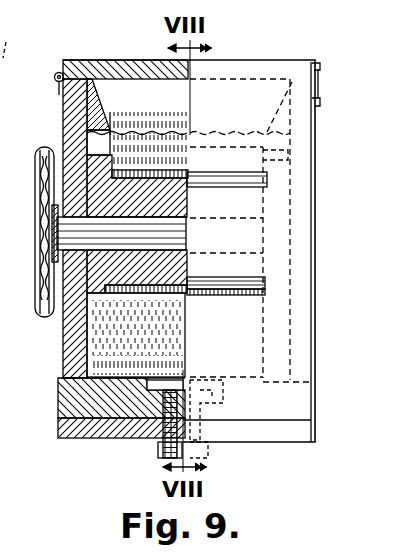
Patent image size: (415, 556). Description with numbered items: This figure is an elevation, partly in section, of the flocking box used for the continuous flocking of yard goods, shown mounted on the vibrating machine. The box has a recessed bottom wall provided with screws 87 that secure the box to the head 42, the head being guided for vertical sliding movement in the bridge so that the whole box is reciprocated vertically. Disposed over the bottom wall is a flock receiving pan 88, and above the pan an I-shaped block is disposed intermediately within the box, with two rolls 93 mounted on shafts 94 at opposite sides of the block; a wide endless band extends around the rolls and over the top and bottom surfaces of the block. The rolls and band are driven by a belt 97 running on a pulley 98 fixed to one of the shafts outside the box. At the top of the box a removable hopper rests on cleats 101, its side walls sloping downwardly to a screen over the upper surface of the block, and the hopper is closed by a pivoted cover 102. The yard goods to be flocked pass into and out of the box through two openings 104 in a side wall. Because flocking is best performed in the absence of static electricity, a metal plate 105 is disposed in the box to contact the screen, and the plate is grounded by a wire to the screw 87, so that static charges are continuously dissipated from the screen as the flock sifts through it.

The head 42 is at (207, 450).
The screws 87 is at (160, 410).
The flock receiving pan 88 is at (67, 380).
The rolls 93 is at (63, 150).
The shafts 94 is at (103, 357).
The belt 97 is at (125, 238).
The pulley 98 is at (32, 292).
The cleats 101 is at (102, 188).
The pivoted cover 102 is at (112, 66).
The openings 104 is at (242, 277).
The metal plate 105 is at (16, 39).